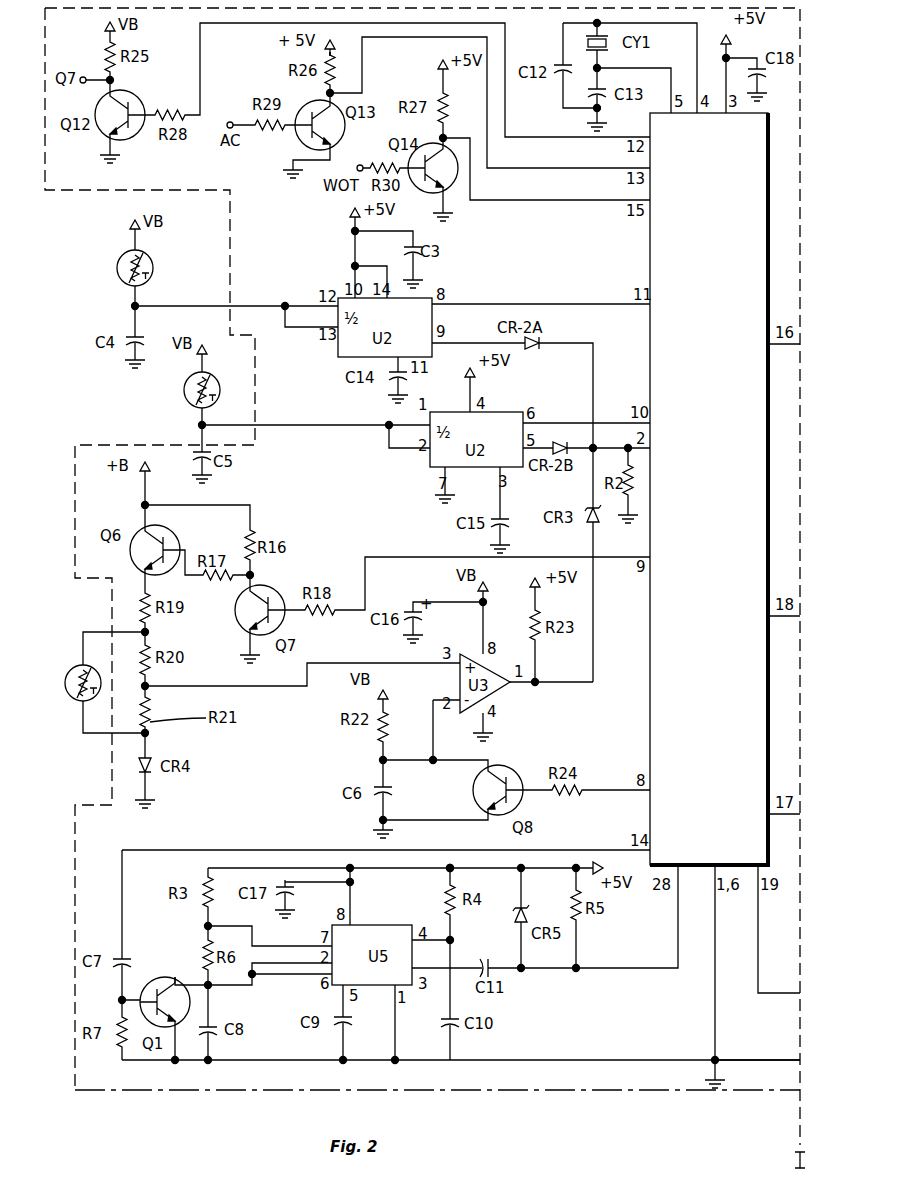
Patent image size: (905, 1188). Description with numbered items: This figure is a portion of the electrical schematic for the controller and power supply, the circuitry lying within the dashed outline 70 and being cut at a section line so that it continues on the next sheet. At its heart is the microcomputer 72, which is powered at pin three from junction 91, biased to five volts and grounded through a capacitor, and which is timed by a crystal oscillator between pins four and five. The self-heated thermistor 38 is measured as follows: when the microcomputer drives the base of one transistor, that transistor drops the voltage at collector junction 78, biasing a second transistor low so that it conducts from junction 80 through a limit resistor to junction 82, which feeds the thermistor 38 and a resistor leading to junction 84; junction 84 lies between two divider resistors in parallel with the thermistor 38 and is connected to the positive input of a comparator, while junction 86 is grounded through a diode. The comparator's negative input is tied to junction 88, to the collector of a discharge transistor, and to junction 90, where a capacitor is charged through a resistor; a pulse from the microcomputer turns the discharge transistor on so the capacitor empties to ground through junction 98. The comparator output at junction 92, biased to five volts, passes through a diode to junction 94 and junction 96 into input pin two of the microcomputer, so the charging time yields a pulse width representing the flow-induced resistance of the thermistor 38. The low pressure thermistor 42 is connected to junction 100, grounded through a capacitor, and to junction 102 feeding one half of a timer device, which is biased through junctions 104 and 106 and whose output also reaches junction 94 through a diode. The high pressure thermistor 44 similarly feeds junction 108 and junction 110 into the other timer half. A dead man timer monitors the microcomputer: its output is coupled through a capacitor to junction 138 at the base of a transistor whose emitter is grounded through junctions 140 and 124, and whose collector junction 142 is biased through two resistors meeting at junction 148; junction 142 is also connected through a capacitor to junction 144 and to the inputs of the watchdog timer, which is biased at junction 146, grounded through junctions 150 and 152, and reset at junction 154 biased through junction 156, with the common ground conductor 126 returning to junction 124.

The self-heated thermistor 38 is at (75, 712).
The low pressure refrigerant temperature thermistor 42 is at (112, 268).
The high pressure refrigerant temperature thermistor 44 is at (180, 396).
The control circuit 70 is at (72, 450).
The microcomputer 72 is at (718, 243).
The collector junction 78 is at (254, 575).
The junction 80 is at (142, 505).
The junction 82 is at (149, 632).
The junction 84 is at (149, 688).
The junction 86 is at (149, 733).
The junction 88 is at (432, 764).
The junction 90 is at (379, 761).
The junction 91 is at (729, 57).
The junction 92 is at (538, 684).
The junction 94 is at (591, 446).
The junction 96 is at (627, 446).
The junction 98 is at (379, 821).
The junction 100 is at (131, 306).
The junction 102 is at (282, 305).
The junction 104 is at (351, 231).
The junction 106 is at (351, 265).
The junction 108 is at (199, 427).
The junction 110 is at (387, 427).
The junction 124 is at (716, 1057).
The ground conductor 126 is at (778, 1062).
The junction 138 is at (118, 1000).
The junction 140 is at (174, 1063).
The junction 142 is at (204, 983).
The junction 144 is at (210, 1063).
The junction 146 is at (352, 884).
The junction 148 is at (204, 926).
The junction 150 is at (343, 1063).
The junction 152 is at (395, 1063).
The junction 154 is at (453, 942).
The junction 156 is at (448, 870).